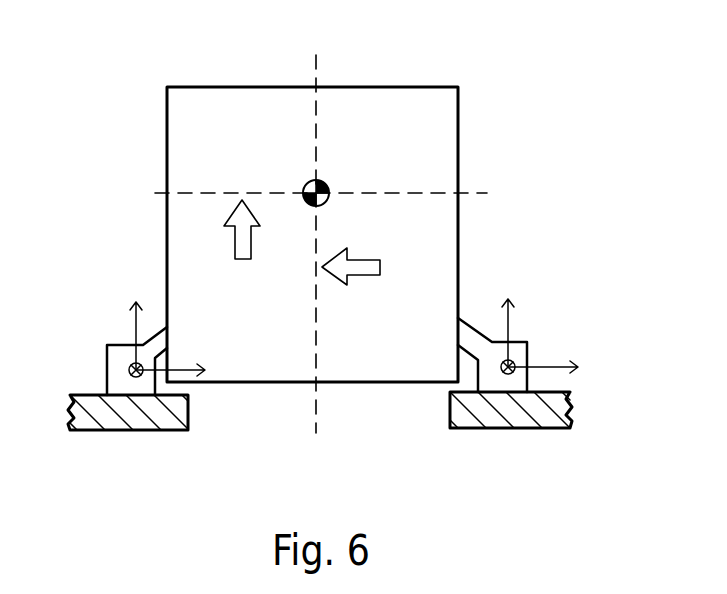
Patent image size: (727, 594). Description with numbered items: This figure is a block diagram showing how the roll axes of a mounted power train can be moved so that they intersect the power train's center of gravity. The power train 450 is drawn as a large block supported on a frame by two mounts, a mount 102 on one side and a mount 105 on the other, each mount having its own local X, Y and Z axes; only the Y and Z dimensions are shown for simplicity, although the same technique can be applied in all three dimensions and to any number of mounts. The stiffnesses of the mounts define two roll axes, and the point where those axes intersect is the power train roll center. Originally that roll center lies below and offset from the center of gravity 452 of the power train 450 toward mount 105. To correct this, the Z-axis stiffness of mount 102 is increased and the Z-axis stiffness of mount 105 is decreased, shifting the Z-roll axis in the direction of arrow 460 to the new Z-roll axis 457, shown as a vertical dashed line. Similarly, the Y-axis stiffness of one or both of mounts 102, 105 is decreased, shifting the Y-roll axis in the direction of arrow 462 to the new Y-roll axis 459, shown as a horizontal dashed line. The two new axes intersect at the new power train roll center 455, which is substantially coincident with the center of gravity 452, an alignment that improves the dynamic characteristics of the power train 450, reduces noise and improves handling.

The mount 102 is at (107, 358).
The mount 105 is at (527, 347).
The power train 450 is at (458, 145).
The center of gravity 452 is at (198, 112).
The new power train roll center 455 is at (306, 184).
The new Z-roll axis 457 is at (357, 52).
The new Y-roll axis 459 is at (480, 191).
The arrow 460 is at (362, 275).
The arrow 462 is at (235, 234).